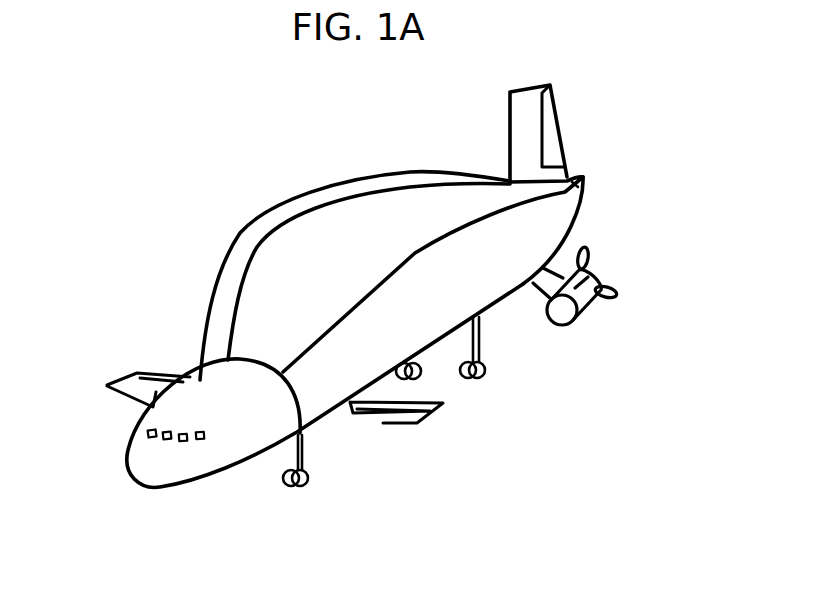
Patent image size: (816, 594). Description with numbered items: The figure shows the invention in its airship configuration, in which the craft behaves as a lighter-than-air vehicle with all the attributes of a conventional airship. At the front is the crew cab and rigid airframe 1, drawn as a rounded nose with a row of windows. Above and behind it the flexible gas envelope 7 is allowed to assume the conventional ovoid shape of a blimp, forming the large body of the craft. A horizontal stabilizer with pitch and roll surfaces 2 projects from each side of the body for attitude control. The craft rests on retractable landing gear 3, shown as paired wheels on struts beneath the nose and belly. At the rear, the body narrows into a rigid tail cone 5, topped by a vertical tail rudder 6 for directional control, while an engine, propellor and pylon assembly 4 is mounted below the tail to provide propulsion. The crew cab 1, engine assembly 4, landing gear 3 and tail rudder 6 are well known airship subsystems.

The crew cab and rigid airframe 1 is at (218, 450).
The horizontal stabilizer with pitch and roll surfaces 2 is at (155, 392).
The retractable landing gear 3 is at (307, 485).
The engine, propellor and pylon assembly 4 is at (592, 274).
The rigid tail cone 5 is at (583, 178).
The vertical tail rudder 6 is at (523, 112).
The flexible gas envelope 7 is at (327, 200).